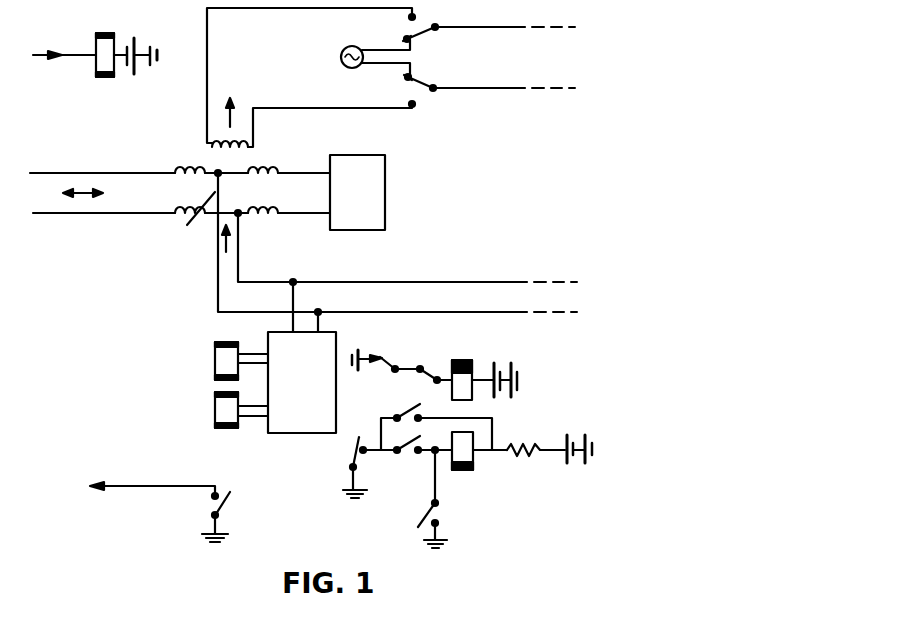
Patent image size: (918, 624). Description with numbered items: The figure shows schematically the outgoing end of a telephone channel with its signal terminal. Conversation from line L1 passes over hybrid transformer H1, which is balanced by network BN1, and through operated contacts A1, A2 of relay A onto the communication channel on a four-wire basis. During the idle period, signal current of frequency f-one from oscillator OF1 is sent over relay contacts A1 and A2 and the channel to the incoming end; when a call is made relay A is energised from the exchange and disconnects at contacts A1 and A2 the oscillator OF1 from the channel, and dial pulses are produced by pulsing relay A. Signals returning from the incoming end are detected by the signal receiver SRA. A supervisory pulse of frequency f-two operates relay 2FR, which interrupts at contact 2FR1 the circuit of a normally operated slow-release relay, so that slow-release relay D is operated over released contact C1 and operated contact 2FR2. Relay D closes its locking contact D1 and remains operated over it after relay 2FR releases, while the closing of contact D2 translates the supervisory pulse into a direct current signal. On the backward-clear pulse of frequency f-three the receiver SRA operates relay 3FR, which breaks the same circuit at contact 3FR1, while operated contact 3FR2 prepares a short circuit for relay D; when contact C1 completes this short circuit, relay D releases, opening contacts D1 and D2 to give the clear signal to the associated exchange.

The relay A is at (95, 45).
The oscillator OF1 is at (311, 77).
The relay contact A1 is at (489, 24).
The relay contact A2 is at (489, 95).
The line L1 is at (177, 190).
The hybrid transformer H1 is at (374, 251).
The balancing network BN1 is at (357, 192).
The signal receiver SRA is at (302, 382).
The relay 2FR is at (220, 361).
The relay 3FR is at (220, 410).
The contact 2FR1 is at (389, 358).
The contact 3FR1 is at (452, 380).
The contact 3FR2 is at (427, 425).
The contact 2FR2 is at (418, 455).
The contact C1 is at (362, 467).
The slow-release relay D is at (522, 463).
The locking contact D1 is at (440, 497).
The contact D2 is at (160, 512).